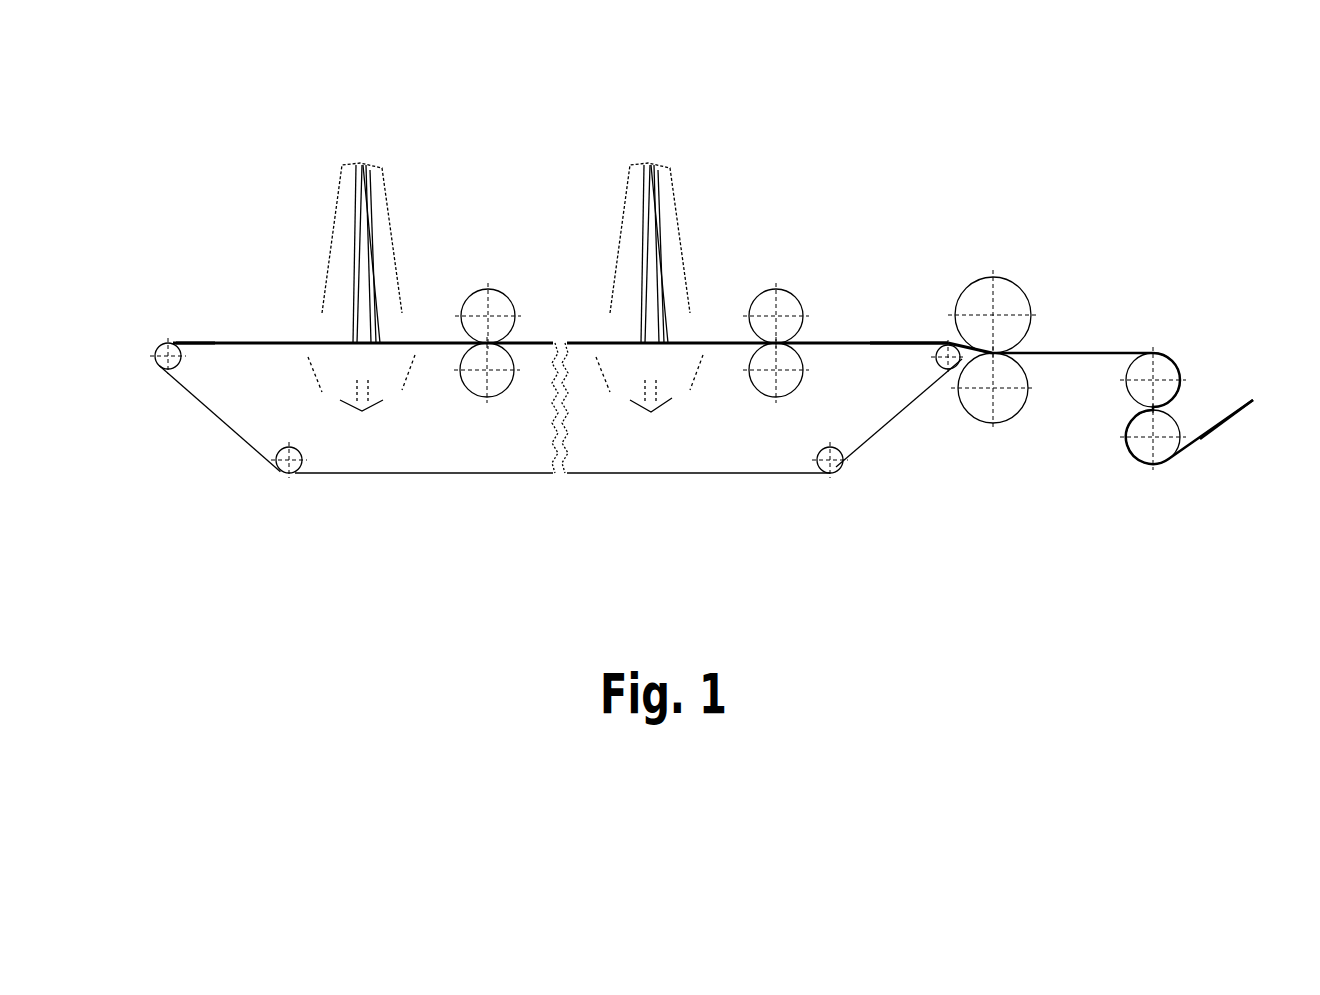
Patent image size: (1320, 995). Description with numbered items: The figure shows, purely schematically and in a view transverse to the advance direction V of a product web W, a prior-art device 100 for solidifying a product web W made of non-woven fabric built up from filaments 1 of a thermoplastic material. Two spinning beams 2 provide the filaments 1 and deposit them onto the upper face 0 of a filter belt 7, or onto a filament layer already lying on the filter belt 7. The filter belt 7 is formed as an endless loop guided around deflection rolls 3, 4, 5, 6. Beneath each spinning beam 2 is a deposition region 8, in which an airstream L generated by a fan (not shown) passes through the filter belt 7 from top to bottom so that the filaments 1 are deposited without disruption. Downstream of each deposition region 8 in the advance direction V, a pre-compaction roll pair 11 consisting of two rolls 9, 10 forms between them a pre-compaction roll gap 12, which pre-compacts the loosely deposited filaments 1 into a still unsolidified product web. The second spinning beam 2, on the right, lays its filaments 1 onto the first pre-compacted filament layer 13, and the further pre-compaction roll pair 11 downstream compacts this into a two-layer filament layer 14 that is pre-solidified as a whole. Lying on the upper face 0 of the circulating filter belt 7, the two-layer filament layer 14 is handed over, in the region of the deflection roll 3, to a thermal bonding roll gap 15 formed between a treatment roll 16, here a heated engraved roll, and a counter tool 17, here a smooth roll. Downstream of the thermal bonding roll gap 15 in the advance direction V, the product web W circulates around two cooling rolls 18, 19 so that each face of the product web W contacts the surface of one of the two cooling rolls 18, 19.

The device 100 is at (127, 187).
The upper face of the filter belt 0 is at (206, 340).
The filaments 1 is at (368, 257).
The spinning beam 2 is at (361, 170).
The deflection roll 3 is at (940, 367).
The deflection roll 4 is at (825, 475).
The deflection roll 5 is at (292, 470).
The deflection roll 6 is at (157, 367).
The filter belt 7 is at (192, 437).
The deposition region 8 is at (399, 325).
The roll of the pre-compaction roll pair 9 is at (500, 303).
The roll of the pre-compaction roll pair 10 is at (493, 387).
The pre-compaction roll pair 11 is at (498, 272).
The pre-compaction roll gap 12 is at (536, 335).
The first pre-compacted filament layer 13 is at (561, 343).
The two-layer filament layer 14 is at (882, 337).
The thermal bonding roll gap 15 is at (1034, 363).
The treatment roll 16 is at (1012, 300).
The counter tool 17 is at (1007, 408).
The cooling roll 18 is at (1167, 365).
The cooling roll 19 is at (1163, 455).
The airstream L is at (367, 410).
The advance direction V is at (1273, 349).
The product web W is at (1213, 433).